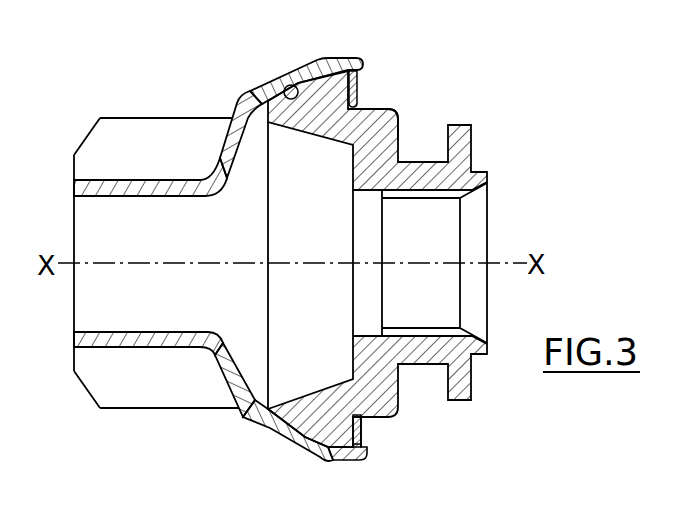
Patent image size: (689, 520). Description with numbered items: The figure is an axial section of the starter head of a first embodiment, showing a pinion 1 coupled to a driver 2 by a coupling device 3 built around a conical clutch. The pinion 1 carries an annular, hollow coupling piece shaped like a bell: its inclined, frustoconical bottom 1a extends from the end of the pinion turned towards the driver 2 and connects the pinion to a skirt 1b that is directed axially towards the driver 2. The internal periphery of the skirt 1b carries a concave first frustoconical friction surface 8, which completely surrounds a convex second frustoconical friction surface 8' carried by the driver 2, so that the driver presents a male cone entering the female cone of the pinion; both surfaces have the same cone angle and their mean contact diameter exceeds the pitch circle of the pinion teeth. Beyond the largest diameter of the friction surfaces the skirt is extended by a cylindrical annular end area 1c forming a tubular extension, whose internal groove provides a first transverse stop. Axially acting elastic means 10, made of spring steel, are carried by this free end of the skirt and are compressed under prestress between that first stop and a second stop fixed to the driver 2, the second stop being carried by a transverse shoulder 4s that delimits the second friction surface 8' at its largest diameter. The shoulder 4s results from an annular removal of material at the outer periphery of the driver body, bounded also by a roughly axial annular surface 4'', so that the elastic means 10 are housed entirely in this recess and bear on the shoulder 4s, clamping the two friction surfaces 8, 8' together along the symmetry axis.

The pinion 1 is at (86, 390).
The annular bottom 1a is at (217, 371).
The skirt 1b is at (273, 442).
The annular end area 1c is at (352, 59).
The driver 2 is at (477, 148).
The coupling device 3 is at (343, 58).
The annular surface 4'' is at (418, 111).
The transverse shoulder 4s is at (363, 433).
The first frustoconical friction surface 8 is at (259, 102).
The second frustoconical friction surface 8' is at (288, 453).
The elastic means 10 is at (367, 430).